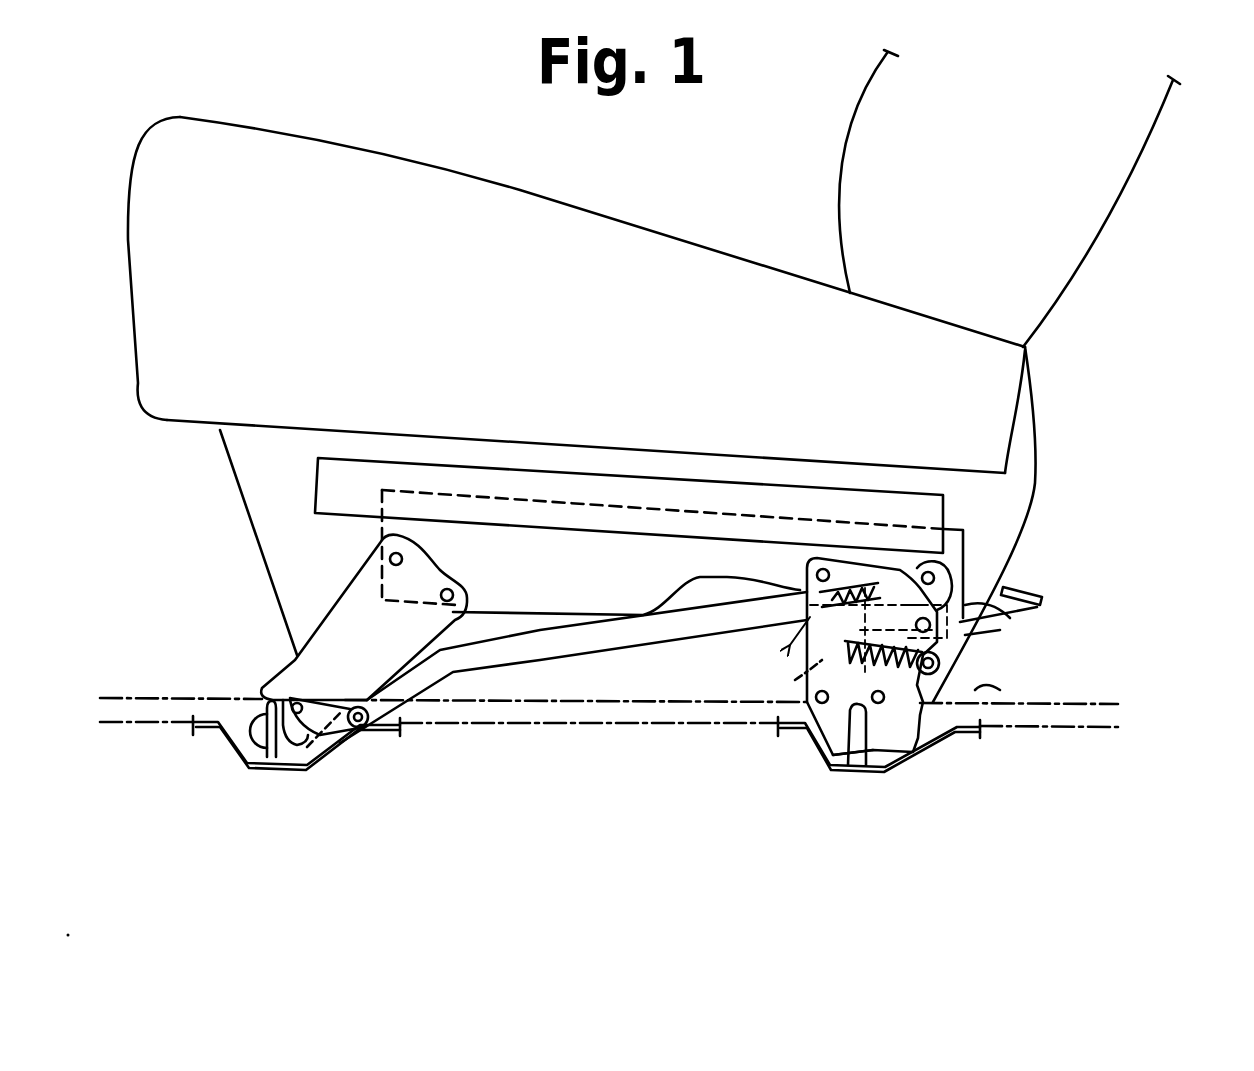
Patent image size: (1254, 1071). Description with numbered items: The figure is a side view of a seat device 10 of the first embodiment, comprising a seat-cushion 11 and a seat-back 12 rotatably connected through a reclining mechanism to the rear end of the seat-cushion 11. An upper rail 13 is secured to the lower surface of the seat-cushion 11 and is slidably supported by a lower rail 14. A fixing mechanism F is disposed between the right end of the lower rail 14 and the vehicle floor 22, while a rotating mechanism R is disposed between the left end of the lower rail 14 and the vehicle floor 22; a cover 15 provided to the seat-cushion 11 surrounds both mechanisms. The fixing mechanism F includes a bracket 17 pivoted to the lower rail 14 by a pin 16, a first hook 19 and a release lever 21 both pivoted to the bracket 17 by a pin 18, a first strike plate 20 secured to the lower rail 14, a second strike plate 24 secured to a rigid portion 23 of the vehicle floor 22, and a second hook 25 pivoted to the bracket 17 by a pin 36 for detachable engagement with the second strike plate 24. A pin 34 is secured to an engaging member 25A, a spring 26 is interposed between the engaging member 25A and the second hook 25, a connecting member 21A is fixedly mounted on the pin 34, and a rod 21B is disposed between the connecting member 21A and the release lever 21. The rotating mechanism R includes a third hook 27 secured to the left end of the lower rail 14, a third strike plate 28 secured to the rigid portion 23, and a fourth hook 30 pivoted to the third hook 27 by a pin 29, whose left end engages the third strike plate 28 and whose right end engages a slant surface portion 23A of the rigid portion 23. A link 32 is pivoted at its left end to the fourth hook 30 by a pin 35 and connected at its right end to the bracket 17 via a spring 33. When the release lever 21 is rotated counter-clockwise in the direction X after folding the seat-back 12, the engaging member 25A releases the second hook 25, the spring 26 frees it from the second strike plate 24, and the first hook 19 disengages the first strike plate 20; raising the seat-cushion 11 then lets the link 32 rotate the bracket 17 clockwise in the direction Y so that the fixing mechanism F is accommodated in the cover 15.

The seat device 10 is at (1120, 498).
The seat-cushion 11 is at (1000, 410).
The seat-back 12 is at (1058, 270).
The upper rail 13 is at (933, 512).
The lower rail 14 is at (955, 542).
The cover 15 is at (1007, 557).
The pin 16 is at (822, 567).
The bracket 17 is at (856, 557).
The pin 18 is at (983, 618).
The first hook 19 is at (940, 566).
The first strike plate 20 is at (928, 565).
The release lever 21 is at (1033, 605).
The connecting member 21A is at (795, 680).
The rod 21B is at (947, 642).
The vehicle floor 22 is at (1090, 699).
The rigid portion 23 is at (1086, 732).
The slant surface portion 23A is at (328, 753).
The second strike plate 24 is at (857, 745).
The second hook 25 is at (887, 745).
The engaging member 25A is at (810, 645).
The spring 26 is at (985, 697).
The third hook 27 is at (313, 650).
The third strike plate 28 is at (247, 765).
The pin 29 is at (308, 765).
The fourth hook 30 is at (337, 750).
The link 32 is at (565, 647).
The spring 33 is at (836, 596).
The pin 34 is at (800, 755).
The pin 35 is at (370, 727).
The pin 36 is at (828, 745).
The rotating mechanism R is at (255, 608).
The fixing mechanism F is at (951, 751).
The counter-clockwise direction X is at (826, 624).
The clockwise direction Y is at (822, 825).